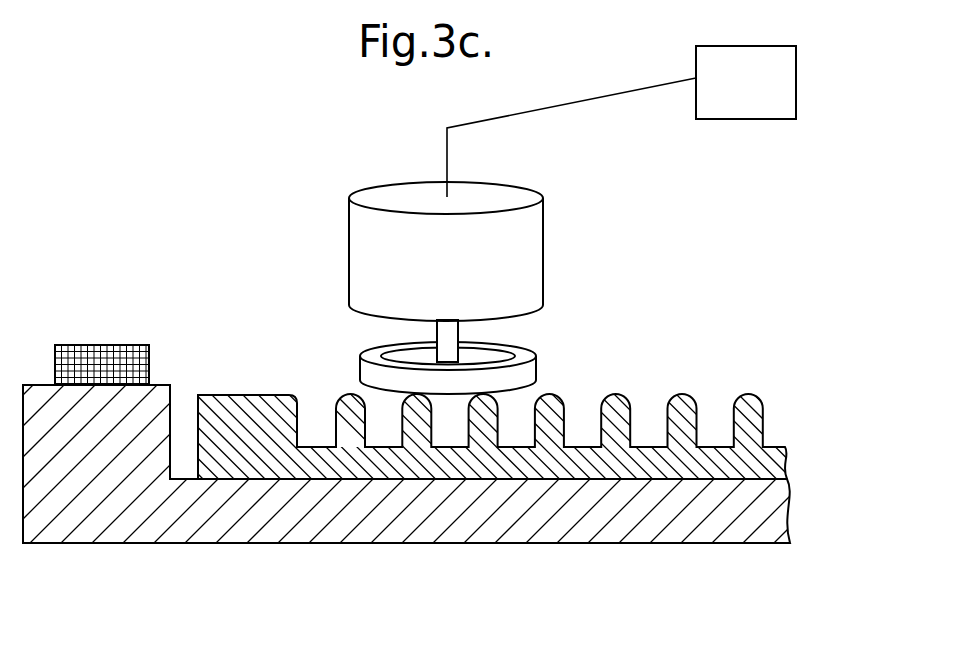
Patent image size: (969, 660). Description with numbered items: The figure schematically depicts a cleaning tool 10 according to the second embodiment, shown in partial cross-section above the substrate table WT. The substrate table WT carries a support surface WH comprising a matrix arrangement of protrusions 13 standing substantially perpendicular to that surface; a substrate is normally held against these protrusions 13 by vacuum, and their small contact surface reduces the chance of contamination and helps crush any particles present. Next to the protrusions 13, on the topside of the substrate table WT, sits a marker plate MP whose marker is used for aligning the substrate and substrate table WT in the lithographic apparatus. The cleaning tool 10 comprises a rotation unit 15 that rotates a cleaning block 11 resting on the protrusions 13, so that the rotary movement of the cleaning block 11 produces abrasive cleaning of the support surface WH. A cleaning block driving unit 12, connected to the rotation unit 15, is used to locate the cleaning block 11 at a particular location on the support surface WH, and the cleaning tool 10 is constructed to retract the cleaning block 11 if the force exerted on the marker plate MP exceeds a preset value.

The cleaning tool 10 is at (662, 121).
The cleaning block 11 is at (350, 354).
The cleaning block driving unit 12 is at (728, 97).
The protrusions 13 is at (686, 397).
The rotation unit 15 is at (527, 194).
The marker plate MP is at (100, 360).
The support surface WH is at (785, 467).
The substrate table WT is at (136, 562).